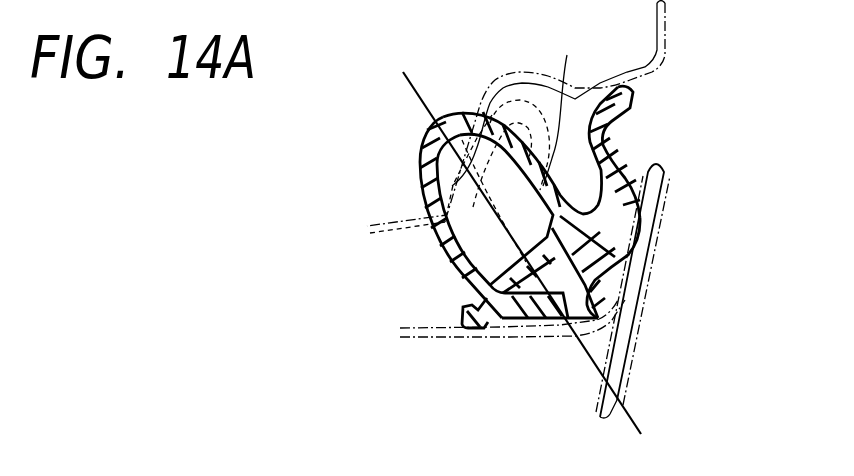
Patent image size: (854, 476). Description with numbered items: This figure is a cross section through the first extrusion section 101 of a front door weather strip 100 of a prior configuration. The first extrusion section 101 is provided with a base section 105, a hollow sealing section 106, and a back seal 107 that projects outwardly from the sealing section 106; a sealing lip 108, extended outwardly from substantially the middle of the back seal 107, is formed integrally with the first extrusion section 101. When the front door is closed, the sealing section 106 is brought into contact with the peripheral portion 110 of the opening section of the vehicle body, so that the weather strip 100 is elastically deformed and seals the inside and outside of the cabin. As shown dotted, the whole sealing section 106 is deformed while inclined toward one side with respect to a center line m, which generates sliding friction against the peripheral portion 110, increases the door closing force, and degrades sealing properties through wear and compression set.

The front door weather strip 100 is at (605, 242).
The first extrusion section 101 is at (372, 271).
The base section 105 is at (463, 313).
The hollow sealing section 106 is at (566, 107).
The back seal 107 is at (640, 222).
The sealing lip 108 is at (622, 145).
The peripheral portion of the opening section 110 is at (668, 31).
The center line m is at (513, 239).